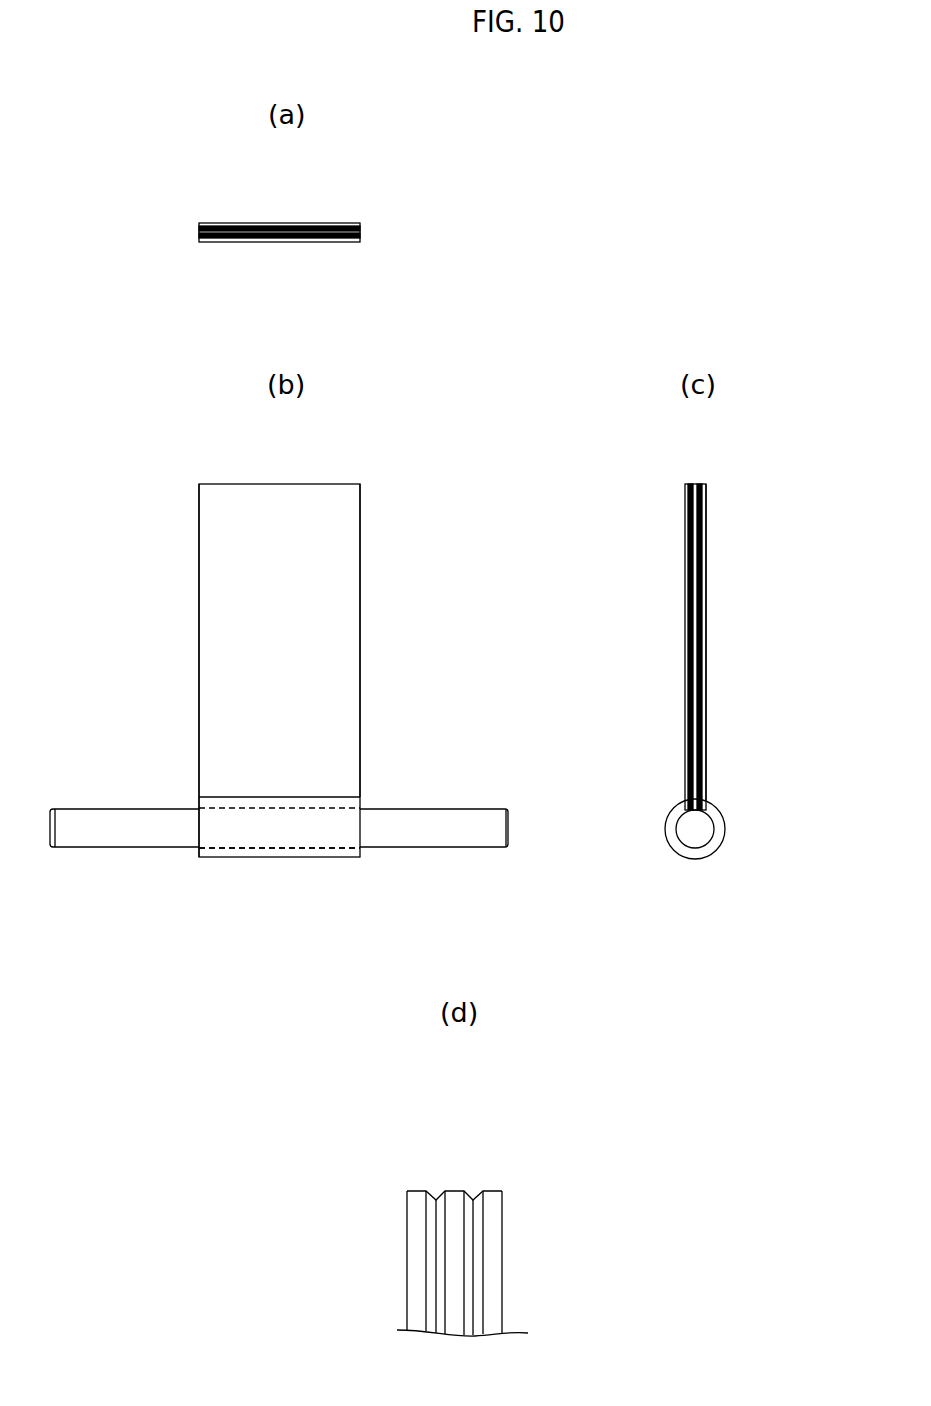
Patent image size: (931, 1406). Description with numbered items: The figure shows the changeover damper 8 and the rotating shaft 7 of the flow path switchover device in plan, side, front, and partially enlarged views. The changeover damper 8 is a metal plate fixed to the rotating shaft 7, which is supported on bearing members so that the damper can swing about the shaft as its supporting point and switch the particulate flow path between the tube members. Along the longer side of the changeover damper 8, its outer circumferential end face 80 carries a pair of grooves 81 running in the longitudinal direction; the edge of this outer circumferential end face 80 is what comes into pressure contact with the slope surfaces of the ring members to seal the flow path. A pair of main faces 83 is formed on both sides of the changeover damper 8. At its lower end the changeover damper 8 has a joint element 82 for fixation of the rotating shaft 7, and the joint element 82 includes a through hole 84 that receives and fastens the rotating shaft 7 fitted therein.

The rotating shaft 7 is at (415, 817).
The changeover damper 8 is at (300, 220).
The outer circumferential end face 80 is at (198, 239).
The grooves 81 is at (198, 227).
The joint element 82 is at (317, 828).
The main faces 83 is at (333, 667).
The through hole 84 is at (228, 848).